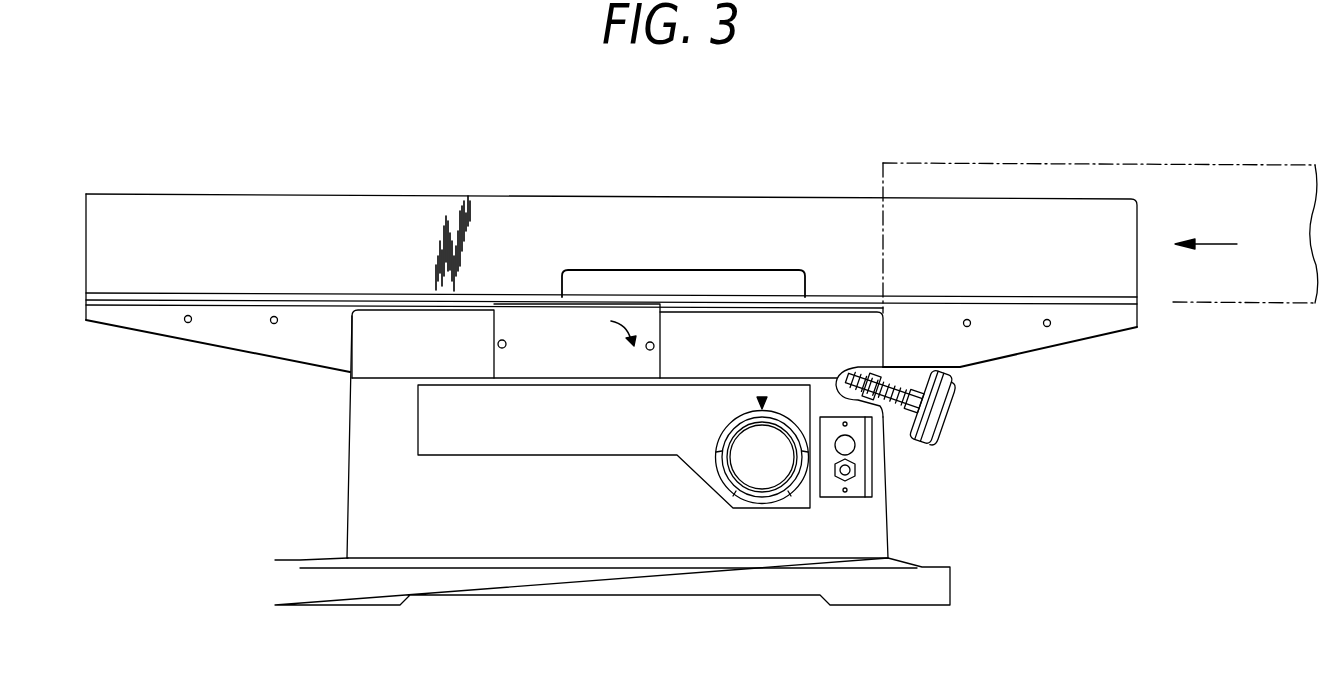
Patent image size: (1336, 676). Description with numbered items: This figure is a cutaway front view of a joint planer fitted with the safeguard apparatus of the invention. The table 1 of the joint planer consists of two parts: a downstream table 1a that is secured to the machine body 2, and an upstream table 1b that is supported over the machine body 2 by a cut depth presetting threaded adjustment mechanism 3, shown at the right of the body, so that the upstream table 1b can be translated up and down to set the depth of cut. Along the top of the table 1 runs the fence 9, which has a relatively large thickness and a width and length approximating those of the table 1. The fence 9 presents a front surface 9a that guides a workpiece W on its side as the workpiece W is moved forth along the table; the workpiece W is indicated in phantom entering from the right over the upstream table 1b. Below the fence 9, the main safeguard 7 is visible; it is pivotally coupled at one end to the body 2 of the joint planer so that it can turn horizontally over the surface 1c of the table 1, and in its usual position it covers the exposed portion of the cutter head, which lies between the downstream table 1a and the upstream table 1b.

The table 1 is at (611, 329).
The downstream table 1a is at (253, 338).
The upstream table 1b is at (1052, 347).
The surface of table 1c is at (328, 299).
The machine body 2 is at (348, 482).
The cut depth presetting threaded adjustment mechanism 3 is at (950, 436).
The main safeguard 7 is at (748, 279).
The fence 9 is at (263, 194).
The front surface 9a is at (344, 212).
The workpiece W is at (1116, 174).